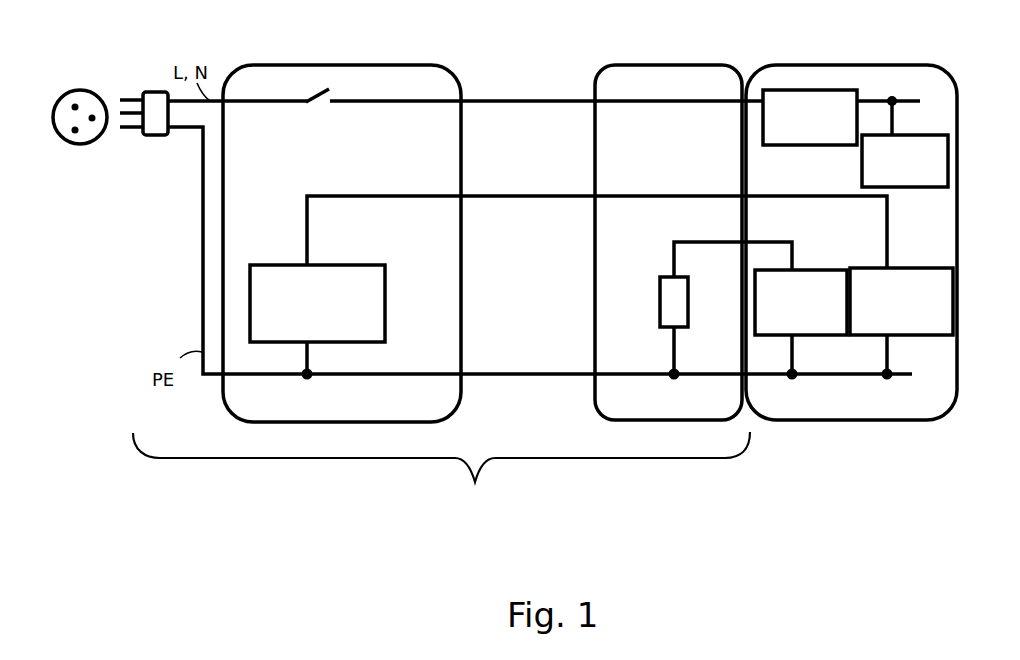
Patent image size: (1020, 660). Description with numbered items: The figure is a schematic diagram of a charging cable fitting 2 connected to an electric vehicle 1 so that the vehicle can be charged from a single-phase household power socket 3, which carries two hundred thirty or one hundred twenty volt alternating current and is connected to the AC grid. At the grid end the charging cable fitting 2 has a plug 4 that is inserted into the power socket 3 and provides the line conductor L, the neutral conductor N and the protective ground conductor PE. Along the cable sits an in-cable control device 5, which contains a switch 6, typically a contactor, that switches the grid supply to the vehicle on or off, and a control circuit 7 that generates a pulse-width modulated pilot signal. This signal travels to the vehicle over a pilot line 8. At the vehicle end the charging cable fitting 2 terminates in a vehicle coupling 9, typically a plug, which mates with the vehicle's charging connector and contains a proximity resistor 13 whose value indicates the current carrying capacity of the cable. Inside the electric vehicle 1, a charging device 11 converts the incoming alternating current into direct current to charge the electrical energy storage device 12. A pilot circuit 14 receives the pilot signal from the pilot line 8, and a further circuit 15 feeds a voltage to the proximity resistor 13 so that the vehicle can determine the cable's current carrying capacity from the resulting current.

The electric vehicle 1 is at (833, 64).
The charging cable fitting 2 is at (441, 475).
The household power socket 3 is at (84, 90).
The plug 4 is at (158, 92).
The in-cable control device 5 is at (241, 408).
The switch 6 is at (318, 106).
The control circuit 7 is at (385, 298).
The pilot line 8 is at (523, 193).
The vehicle coupling 9 is at (655, 64).
The charging device 11 is at (840, 90).
The electrical energy storage device 12 is at (862, 162).
The proximity resistor 13 is at (670, 276).
The pilot circuit 14 is at (910, 268).
The circuit 15 is at (815, 268).